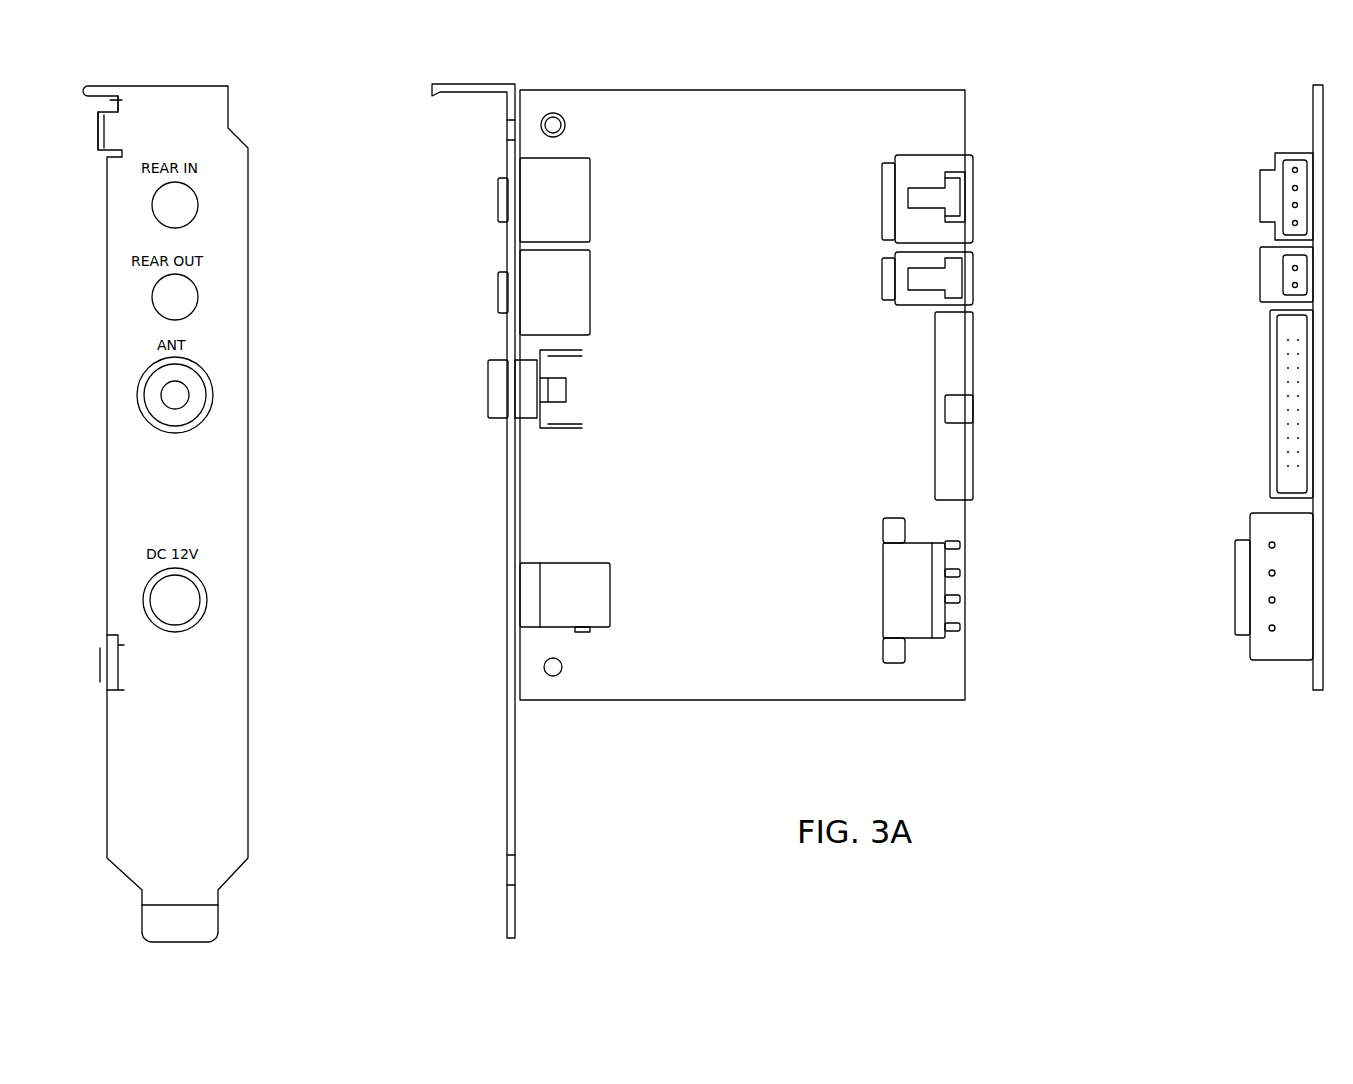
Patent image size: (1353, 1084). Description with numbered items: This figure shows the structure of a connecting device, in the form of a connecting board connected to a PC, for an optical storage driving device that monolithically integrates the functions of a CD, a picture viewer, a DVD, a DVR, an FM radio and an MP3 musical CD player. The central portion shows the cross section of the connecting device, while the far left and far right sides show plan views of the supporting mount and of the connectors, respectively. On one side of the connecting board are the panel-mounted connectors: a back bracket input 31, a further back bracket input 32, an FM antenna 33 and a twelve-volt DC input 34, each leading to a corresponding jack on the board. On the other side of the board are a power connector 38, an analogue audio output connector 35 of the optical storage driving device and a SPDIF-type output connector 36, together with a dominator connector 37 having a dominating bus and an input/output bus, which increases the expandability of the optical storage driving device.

The back bracket input 31 is at (203, 210).
The back bracket input 32 is at (203, 295).
The FM antenna 33 is at (222, 394).
The 12-volt DC input 34 is at (214, 600).
The analogue audio output connector 35 is at (1232, 187).
The SPDIF-type output connector 36 is at (1225, 275).
The dominator connector 37 is at (965, 355).
The power connector 38 is at (940, 585).